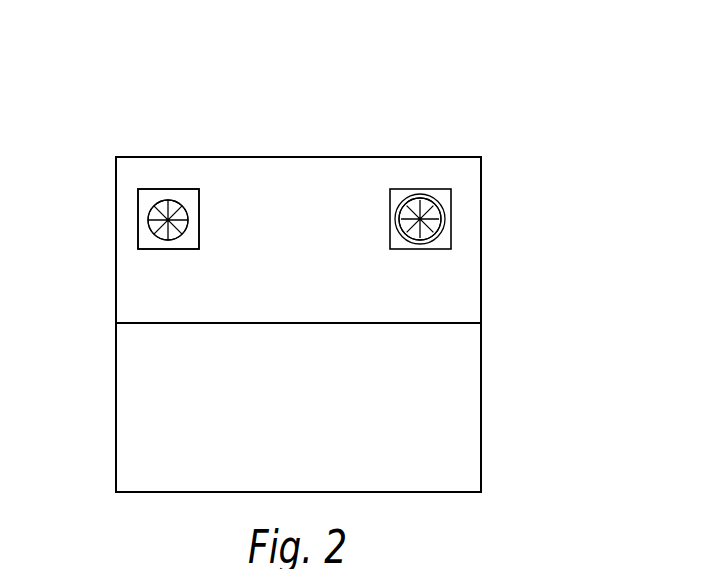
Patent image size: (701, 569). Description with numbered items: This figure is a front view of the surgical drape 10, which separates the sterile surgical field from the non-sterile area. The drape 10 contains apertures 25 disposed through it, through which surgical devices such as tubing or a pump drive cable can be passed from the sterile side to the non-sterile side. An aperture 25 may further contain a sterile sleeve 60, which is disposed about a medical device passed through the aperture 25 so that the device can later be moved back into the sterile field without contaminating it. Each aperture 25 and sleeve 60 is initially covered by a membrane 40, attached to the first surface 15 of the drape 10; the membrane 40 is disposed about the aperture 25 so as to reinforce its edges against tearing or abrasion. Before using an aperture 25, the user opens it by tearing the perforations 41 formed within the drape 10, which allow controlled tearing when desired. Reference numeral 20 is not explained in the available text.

The surgical drape 10 is at (298, 136).
The first surface 15 is at (140, 196).
The terminal post 20 is at (173, 202).
The aperture 25 is at (432, 217).
The membrane 40 is at (193, 200).
The perforations 41 is at (152, 222).
The sterile sleeve 60 is at (427, 195).